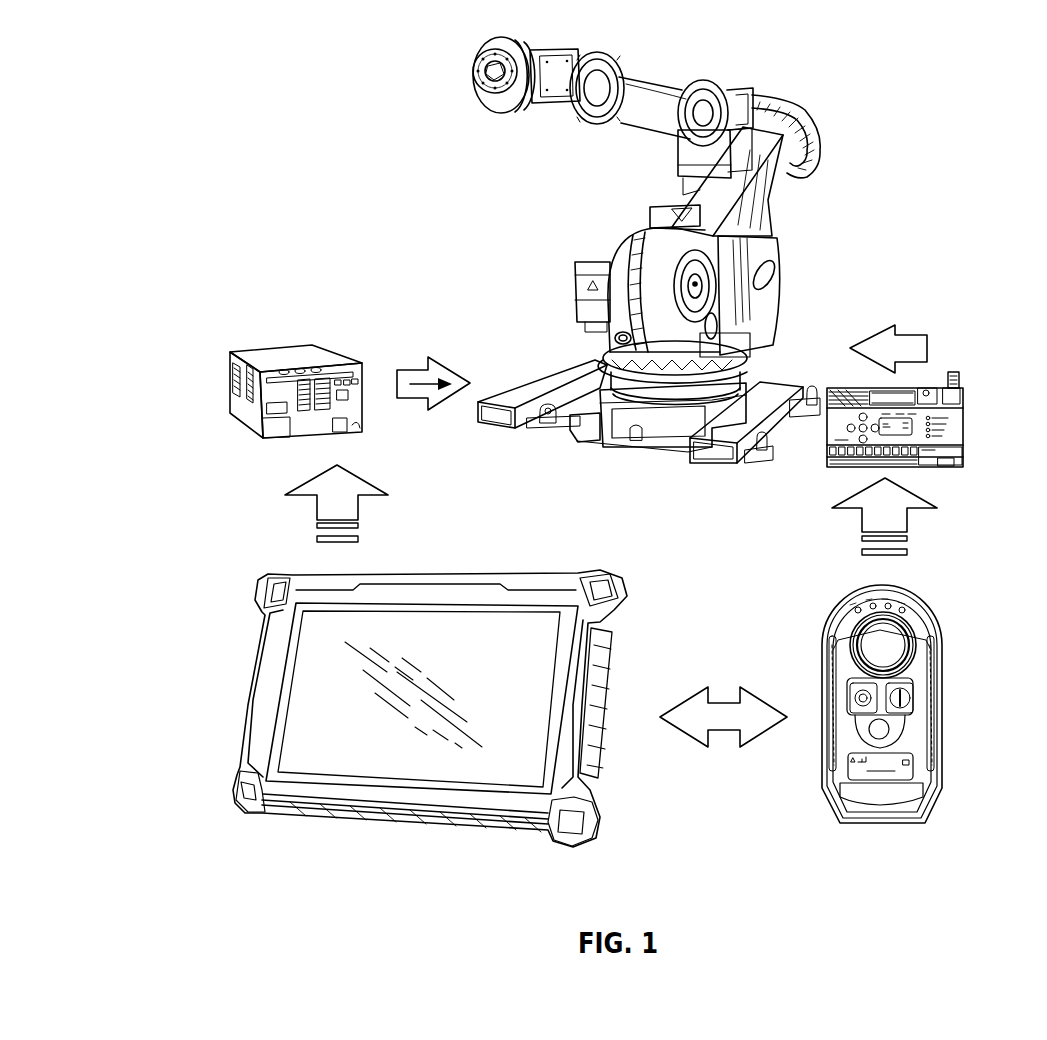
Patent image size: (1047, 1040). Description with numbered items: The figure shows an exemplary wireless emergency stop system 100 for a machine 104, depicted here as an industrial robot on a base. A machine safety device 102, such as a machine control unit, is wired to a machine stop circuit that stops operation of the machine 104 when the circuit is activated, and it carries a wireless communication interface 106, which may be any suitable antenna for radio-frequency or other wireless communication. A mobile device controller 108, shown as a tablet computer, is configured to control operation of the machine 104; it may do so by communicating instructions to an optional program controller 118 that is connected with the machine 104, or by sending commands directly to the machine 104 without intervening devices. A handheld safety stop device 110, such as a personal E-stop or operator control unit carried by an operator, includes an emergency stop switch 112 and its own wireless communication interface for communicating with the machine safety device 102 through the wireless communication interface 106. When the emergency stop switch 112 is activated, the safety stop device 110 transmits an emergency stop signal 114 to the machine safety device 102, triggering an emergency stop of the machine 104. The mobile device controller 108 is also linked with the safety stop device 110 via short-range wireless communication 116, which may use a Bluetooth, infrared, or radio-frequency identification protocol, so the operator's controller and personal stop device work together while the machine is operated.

The wireless emergency stop system 100 is at (203, 74).
The machine safety device 102 is at (947, 435).
The machine 104 is at (612, 247).
The wireless communication interface 106 is at (960, 381).
The mobile device controller 108 is at (398, 728).
The safety stop device 110 is at (907, 745).
The emergency stop switch 112 is at (882, 646).
The emergency stop signal 114 is at (850, 513).
The short-range wireless communication 116 is at (724, 738).
The program controller 118 is at (240, 398).